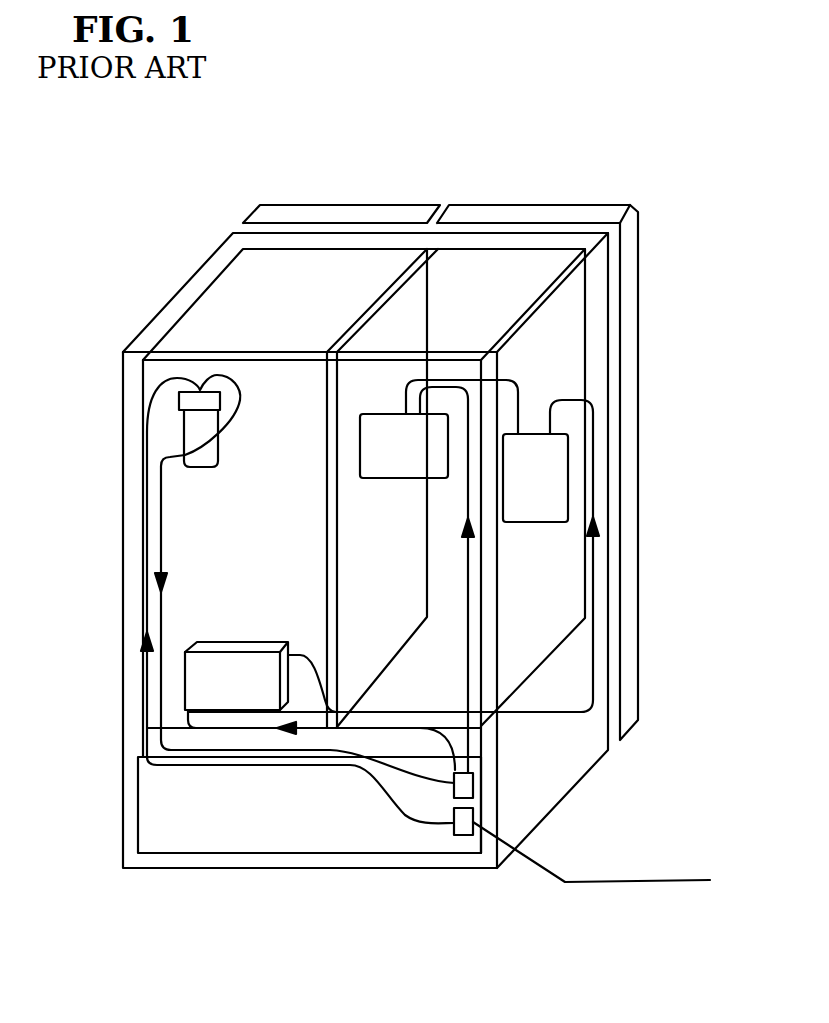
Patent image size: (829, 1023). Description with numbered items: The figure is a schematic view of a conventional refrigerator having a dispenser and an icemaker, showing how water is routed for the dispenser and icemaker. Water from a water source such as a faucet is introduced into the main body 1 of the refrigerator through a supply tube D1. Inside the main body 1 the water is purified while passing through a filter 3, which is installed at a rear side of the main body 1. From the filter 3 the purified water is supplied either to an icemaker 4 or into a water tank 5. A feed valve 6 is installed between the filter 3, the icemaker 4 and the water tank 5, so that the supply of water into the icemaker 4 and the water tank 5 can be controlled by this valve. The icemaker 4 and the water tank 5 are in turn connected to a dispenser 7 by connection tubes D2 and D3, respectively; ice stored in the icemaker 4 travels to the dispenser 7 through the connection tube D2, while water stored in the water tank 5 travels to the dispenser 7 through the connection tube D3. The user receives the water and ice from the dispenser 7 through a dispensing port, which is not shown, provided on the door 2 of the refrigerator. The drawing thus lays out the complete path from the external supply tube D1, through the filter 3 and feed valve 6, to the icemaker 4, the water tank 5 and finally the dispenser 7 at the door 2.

The main body 1 is at (178, 294).
The door 2 is at (567, 213).
The filter 3 is at (190, 434).
The icemaker 4 is at (380, 480).
The water tank 5 is at (190, 687).
The feed valve 6 is at (473, 780).
The dispenser 7 is at (570, 473).
The supply tube D1 is at (387, 798).
The connection tube D2 is at (593, 550).
The connection tube D3 is at (497, 370).